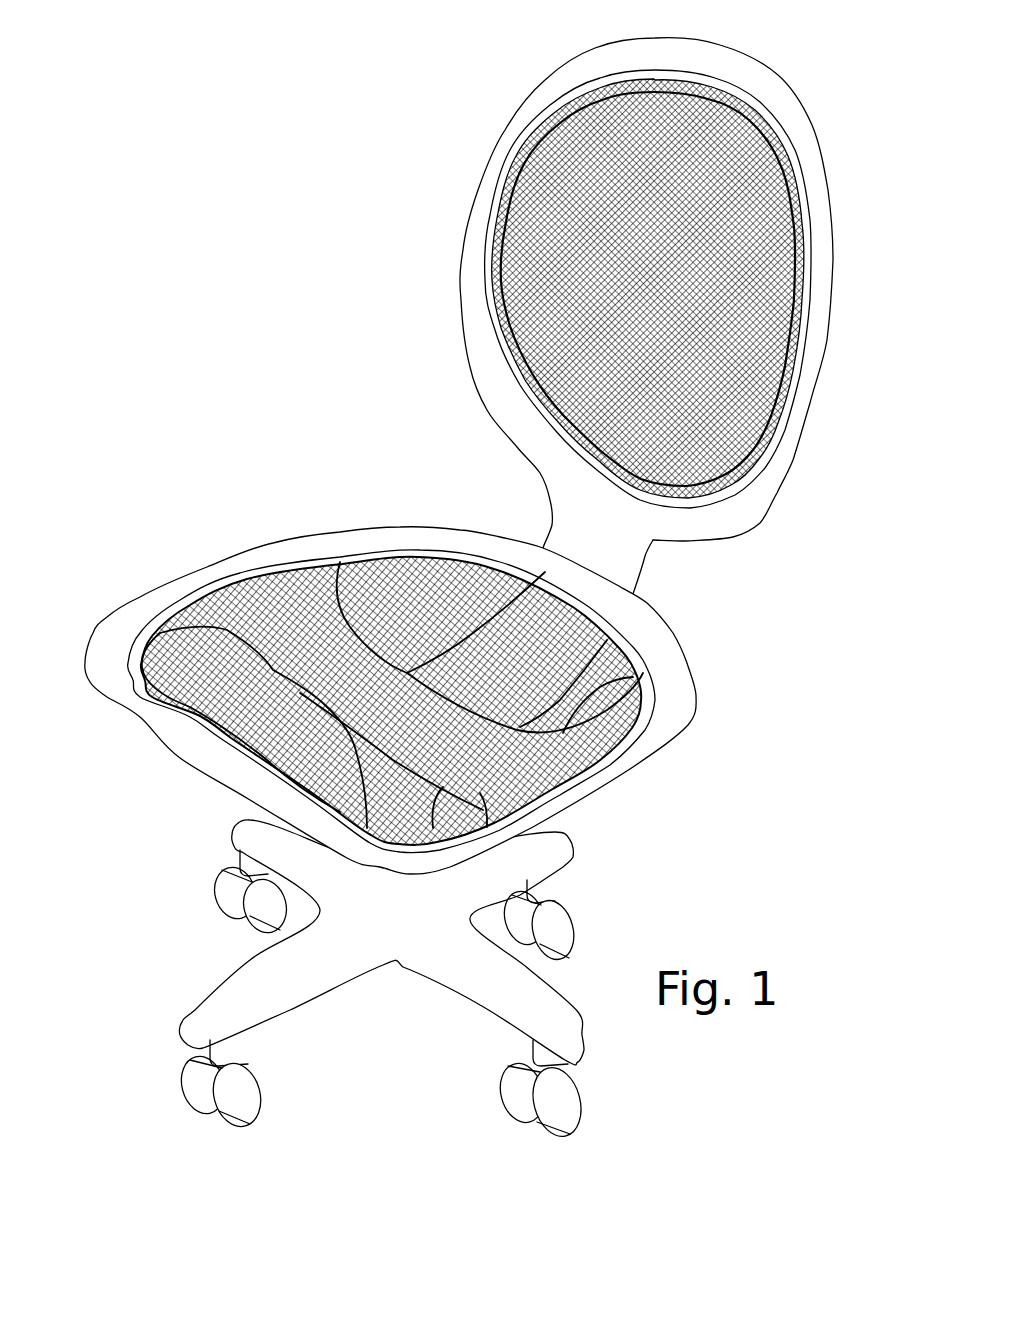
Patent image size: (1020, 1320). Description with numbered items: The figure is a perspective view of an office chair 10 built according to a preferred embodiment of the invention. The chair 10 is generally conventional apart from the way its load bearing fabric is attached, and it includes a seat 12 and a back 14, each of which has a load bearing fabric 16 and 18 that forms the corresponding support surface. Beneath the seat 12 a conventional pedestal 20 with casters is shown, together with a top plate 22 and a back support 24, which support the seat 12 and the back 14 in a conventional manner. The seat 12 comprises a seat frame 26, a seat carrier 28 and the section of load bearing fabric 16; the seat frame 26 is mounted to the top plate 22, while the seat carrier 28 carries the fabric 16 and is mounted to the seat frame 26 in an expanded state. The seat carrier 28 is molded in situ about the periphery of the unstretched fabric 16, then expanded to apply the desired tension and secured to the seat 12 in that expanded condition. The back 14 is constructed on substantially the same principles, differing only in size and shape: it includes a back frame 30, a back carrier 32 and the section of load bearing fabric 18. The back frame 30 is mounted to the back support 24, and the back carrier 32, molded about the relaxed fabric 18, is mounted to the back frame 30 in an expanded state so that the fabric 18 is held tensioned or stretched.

The office chair 10 is at (206, 284).
The seat 12 is at (442, 642).
The back 14 is at (606, 317).
The load bearing fabric 16 is at (458, 628).
The load bearing fabric 18 is at (587, 272).
The pedestal 20 is at (160, 982).
The top plate 22 is at (607, 690).
The back support 24 is at (647, 560).
The seat frame 26 is at (83, 667).
The seat carrier 28 is at (640, 647).
The back frame 30 is at (478, 230).
The back carrier 32 is at (560, 112).